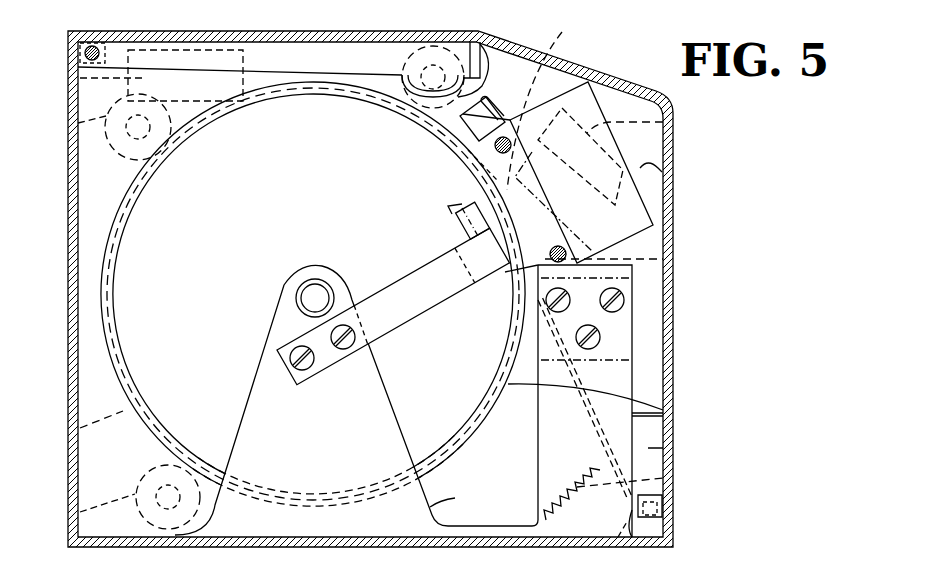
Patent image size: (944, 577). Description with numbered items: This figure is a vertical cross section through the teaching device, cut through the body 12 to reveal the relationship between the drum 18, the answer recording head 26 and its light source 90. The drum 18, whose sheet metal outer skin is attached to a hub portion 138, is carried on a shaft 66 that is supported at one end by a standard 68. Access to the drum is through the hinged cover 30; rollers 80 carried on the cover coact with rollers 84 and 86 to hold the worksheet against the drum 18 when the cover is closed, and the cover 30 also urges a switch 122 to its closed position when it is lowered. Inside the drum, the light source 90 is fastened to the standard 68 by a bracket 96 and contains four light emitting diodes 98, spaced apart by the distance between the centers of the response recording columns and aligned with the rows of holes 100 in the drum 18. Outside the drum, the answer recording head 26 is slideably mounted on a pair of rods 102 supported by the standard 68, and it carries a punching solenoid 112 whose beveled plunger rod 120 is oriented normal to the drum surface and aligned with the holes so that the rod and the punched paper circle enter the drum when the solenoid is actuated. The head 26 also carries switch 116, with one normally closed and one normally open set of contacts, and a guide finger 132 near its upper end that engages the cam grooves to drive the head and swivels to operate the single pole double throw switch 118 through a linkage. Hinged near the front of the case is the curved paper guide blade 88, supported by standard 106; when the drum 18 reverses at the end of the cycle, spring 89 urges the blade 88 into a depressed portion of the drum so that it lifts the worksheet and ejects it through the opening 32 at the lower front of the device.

The body 12 is at (70, 333).
The drum 18 is at (80, 428).
The answer recording head 26 is at (486, 141).
The hinged cover 30 is at (312, 32).
The opening 32 is at (665, 447).
The shaft 66 is at (315, 284).
The standard 68 is at (535, 480).
The rollers 80 is at (482, 40).
The rollers 84 is at (78, 124).
The rollers 86 is at (80, 513).
The paper guide blade 88 is at (664, 411).
The spring 89 is at (664, 479).
The light source 90 is at (472, 200).
The bracket 96 is at (420, 315).
The light emitting diodes 98 is at (462, 223).
The rows of holes 100 is at (478, 178).
The rods 102 is at (552, 50).
The standard 106 is at (663, 502).
The punching solenoid 112 is at (664, 125).
The switch 116 is at (655, 221).
The switch 118 is at (660, 170).
The plunger rod 120 is at (548, 231).
The switch 122 is at (64, 88).
The guide finger 132 is at (425, 132).
The hub portion 138 is at (147, 216).